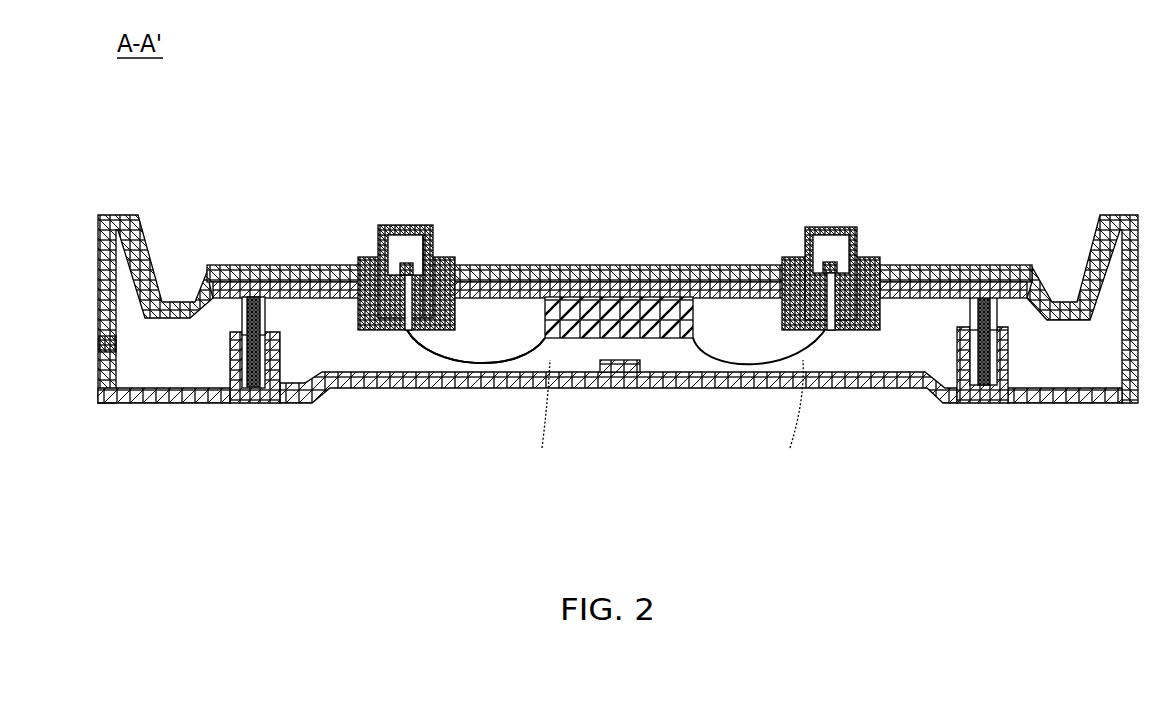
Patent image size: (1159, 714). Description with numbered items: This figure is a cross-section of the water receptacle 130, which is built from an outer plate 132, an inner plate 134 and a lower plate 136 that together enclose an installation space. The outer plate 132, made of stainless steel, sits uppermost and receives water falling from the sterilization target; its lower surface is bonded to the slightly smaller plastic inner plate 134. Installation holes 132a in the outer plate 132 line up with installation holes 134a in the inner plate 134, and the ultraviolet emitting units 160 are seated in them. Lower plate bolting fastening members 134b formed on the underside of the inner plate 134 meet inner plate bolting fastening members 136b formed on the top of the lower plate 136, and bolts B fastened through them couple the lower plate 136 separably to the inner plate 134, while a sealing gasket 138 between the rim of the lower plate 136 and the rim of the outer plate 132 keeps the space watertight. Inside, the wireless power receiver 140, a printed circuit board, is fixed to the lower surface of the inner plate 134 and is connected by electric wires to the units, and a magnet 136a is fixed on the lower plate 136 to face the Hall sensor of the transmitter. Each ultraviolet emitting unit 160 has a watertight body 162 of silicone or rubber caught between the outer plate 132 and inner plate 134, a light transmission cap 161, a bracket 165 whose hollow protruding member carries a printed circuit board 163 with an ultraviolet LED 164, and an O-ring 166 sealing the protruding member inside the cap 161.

The water receptacle 130 is at (596, 243).
The outer plate 132 is at (250, 265).
The installation holes 132a is at (800, 257).
The inner plate 134 is at (320, 299).
The installation holes 134a is at (873, 332).
The lower plate bolting fastening members 134b is at (200, 297).
The lower plate 136 is at (170, 404).
The magnet 136a is at (612, 373).
The inner plate bolting fastening members 136b is at (286, 404).
The sealing gasket 138 is at (118, 343).
The wireless power receiver 140 is at (694, 320).
The ultraviolet emitting units 160 is at (368, 200).
The light transmission cap 161 is at (420, 250).
The watertight body 162 is at (360, 258).
The printed circuit board 163 is at (398, 226).
The ultraviolet LED 164 is at (408, 262).
The bracket 165 is at (444, 366).
The O-ring 166 is at (455, 320).
The bolts B is at (258, 388).